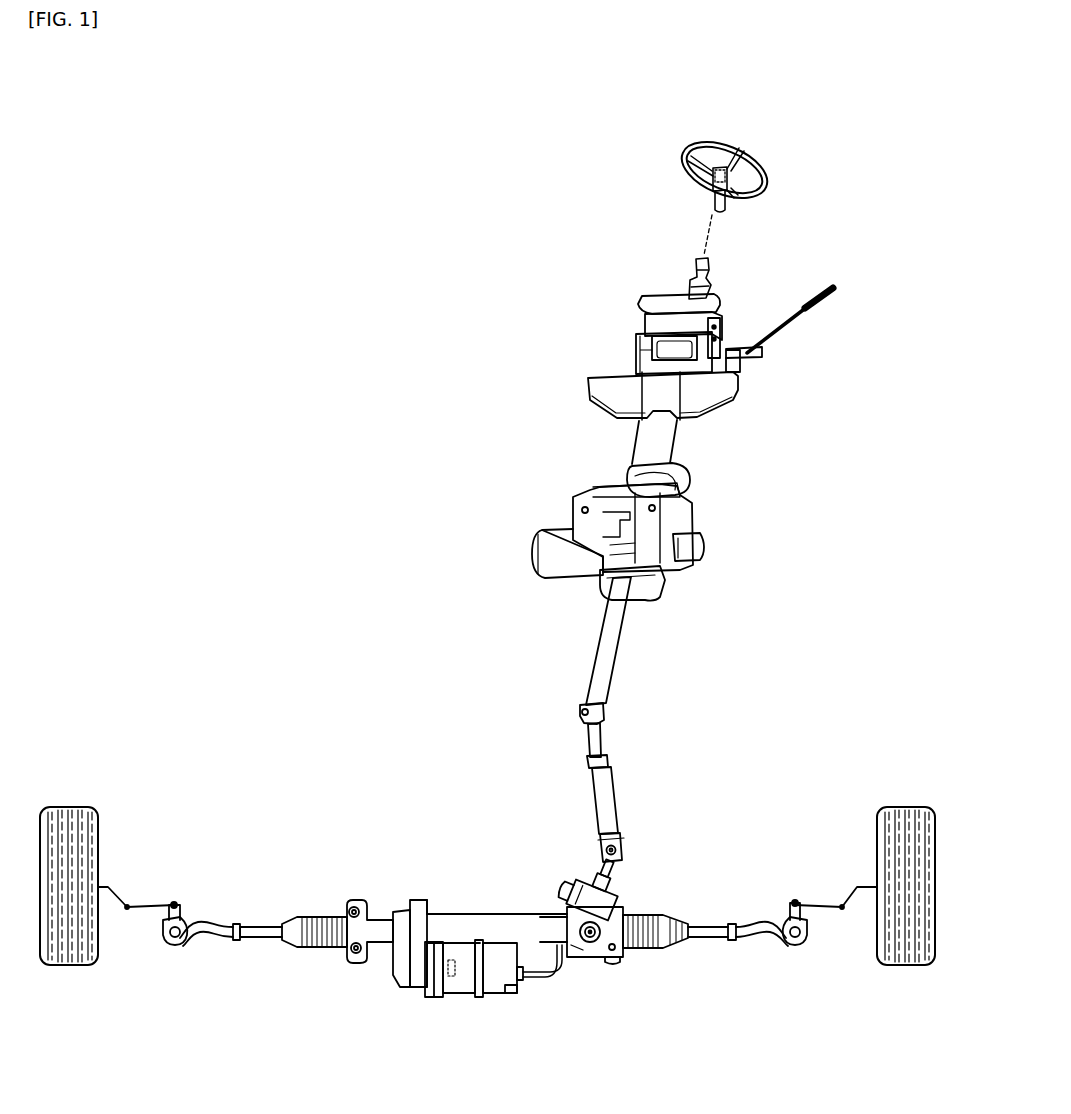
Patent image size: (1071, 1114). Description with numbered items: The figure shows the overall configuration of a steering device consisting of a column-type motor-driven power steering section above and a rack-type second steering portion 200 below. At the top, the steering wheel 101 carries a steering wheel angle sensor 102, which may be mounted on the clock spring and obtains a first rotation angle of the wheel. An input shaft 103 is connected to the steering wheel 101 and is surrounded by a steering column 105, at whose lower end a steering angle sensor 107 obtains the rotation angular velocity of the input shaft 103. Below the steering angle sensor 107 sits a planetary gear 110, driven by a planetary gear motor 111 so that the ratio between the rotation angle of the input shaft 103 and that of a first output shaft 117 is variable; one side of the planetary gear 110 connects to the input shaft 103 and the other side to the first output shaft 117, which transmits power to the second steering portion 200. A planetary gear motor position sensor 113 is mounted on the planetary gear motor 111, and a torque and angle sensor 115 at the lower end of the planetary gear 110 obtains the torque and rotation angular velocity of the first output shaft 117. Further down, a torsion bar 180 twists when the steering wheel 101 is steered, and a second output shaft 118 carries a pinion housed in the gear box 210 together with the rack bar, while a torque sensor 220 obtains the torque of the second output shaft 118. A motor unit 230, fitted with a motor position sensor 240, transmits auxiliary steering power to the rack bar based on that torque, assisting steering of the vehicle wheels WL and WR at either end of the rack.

The steering wheel 101 is at (745, 150).
The steering wheel angle sensor 102 is at (700, 178).
The input shaft 103 is at (693, 290).
The steering column 105 is at (736, 320).
The steering angle sensor 107 is at (690, 466).
The planetary gear 110 is at (582, 478).
The planetary gear motor 111 is at (548, 540).
The planetary gear motor position sensor 113 is at (702, 550).
The torque and angle sensor 115 is at (650, 600).
The first output shaft 117 is at (605, 640).
The torsion bar 180 is at (607, 800).
The second output shaft 118 is at (620, 874).
The second steering portion 200 is at (518, 1015).
The gear box 210 is at (570, 940).
The torque sensor 220 is at (585, 893).
The motor unit 230 is at (462, 985).
The motor position sensor 240 is at (448, 972).
The vehicle wheel WR is at (70, 806).
The vehicle wheel WL is at (900, 806).